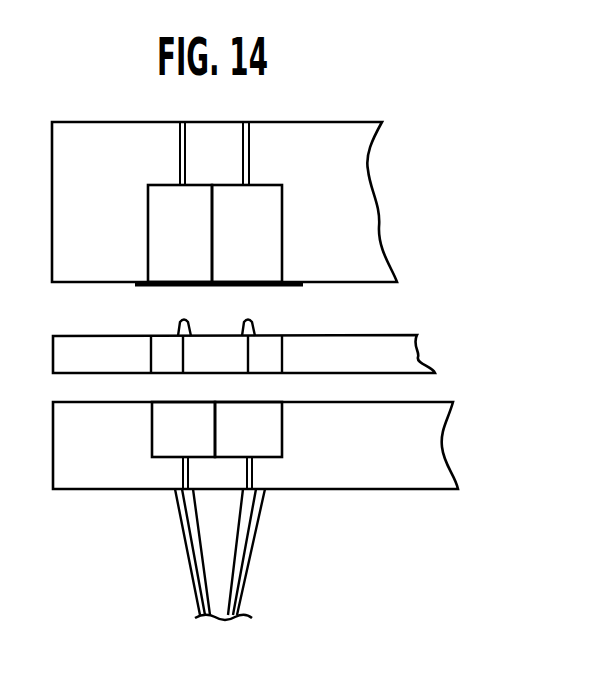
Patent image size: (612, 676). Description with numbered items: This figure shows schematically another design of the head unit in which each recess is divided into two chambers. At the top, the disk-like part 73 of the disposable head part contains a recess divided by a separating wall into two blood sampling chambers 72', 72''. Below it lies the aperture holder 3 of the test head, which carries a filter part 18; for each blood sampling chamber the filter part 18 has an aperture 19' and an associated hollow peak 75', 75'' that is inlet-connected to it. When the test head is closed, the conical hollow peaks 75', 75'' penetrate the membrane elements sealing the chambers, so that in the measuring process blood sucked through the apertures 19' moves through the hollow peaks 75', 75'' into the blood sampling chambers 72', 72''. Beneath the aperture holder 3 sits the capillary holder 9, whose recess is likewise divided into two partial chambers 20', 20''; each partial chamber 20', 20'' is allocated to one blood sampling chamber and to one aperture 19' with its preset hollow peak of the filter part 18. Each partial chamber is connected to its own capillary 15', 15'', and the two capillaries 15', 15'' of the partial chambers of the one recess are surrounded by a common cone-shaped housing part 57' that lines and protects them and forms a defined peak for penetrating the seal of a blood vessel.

The disk-like part 73 is at (357, 210).
The first blood sampling chamber 72' is at (180, 202).
The second blood sampling chamber 72'' is at (247, 202).
The aperture holder 3 is at (417, 357).
The filter part 18 is at (283, 352).
The first hollow peak 75' is at (134, 313).
The second hollow peak 75'' is at (296, 312).
The capillary holder 9 is at (440, 447).
The first partial chamber 20' is at (183, 445).
The second partial chamber 20'' is at (248, 445).
The aperture 19' is at (218, 401).
The first capillary 15' is at (160, 552).
The second capillary 15'' is at (285, 552).
The housing part 57' is at (259, 594).